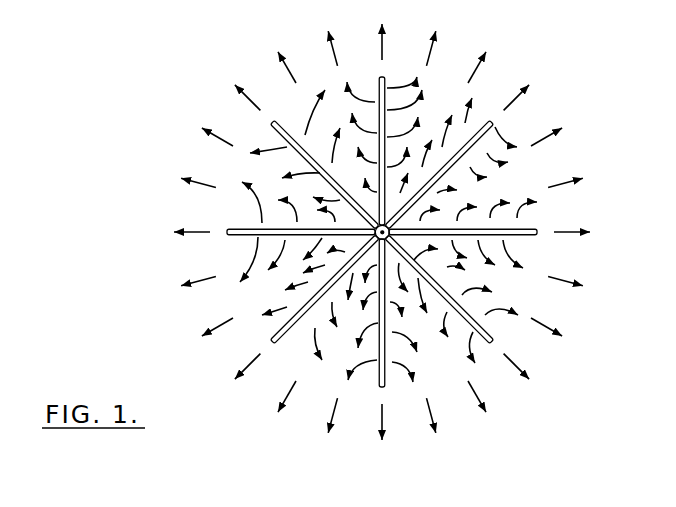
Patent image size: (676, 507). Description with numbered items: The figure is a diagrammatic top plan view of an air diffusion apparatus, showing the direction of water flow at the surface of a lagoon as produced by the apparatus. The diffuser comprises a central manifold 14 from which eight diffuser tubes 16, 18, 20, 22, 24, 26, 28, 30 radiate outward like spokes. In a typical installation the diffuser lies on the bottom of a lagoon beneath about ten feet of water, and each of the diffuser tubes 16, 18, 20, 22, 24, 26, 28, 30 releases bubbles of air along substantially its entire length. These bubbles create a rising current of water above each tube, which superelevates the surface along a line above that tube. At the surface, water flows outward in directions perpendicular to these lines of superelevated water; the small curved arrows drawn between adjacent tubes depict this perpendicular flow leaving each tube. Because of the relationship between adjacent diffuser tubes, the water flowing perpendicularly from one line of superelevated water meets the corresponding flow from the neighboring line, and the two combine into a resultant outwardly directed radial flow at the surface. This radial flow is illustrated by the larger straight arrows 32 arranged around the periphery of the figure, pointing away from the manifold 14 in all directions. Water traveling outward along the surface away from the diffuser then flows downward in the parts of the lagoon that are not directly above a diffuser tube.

The manifold 14 is at (389, 238).
The diffuser tube 16 is at (490, 336).
The diffuser tube 18 is at (385, 388).
The diffuser tube 20 is at (286, 330).
The diffuser tube 22 is at (240, 238).
The diffuser tube 24 is at (292, 110).
The diffuser tube 26 is at (385, 77).
The diffuser tube 28 is at (494, 124).
The diffuser tube 30 is at (533, 229).
The arrows 32 is at (515, 364).